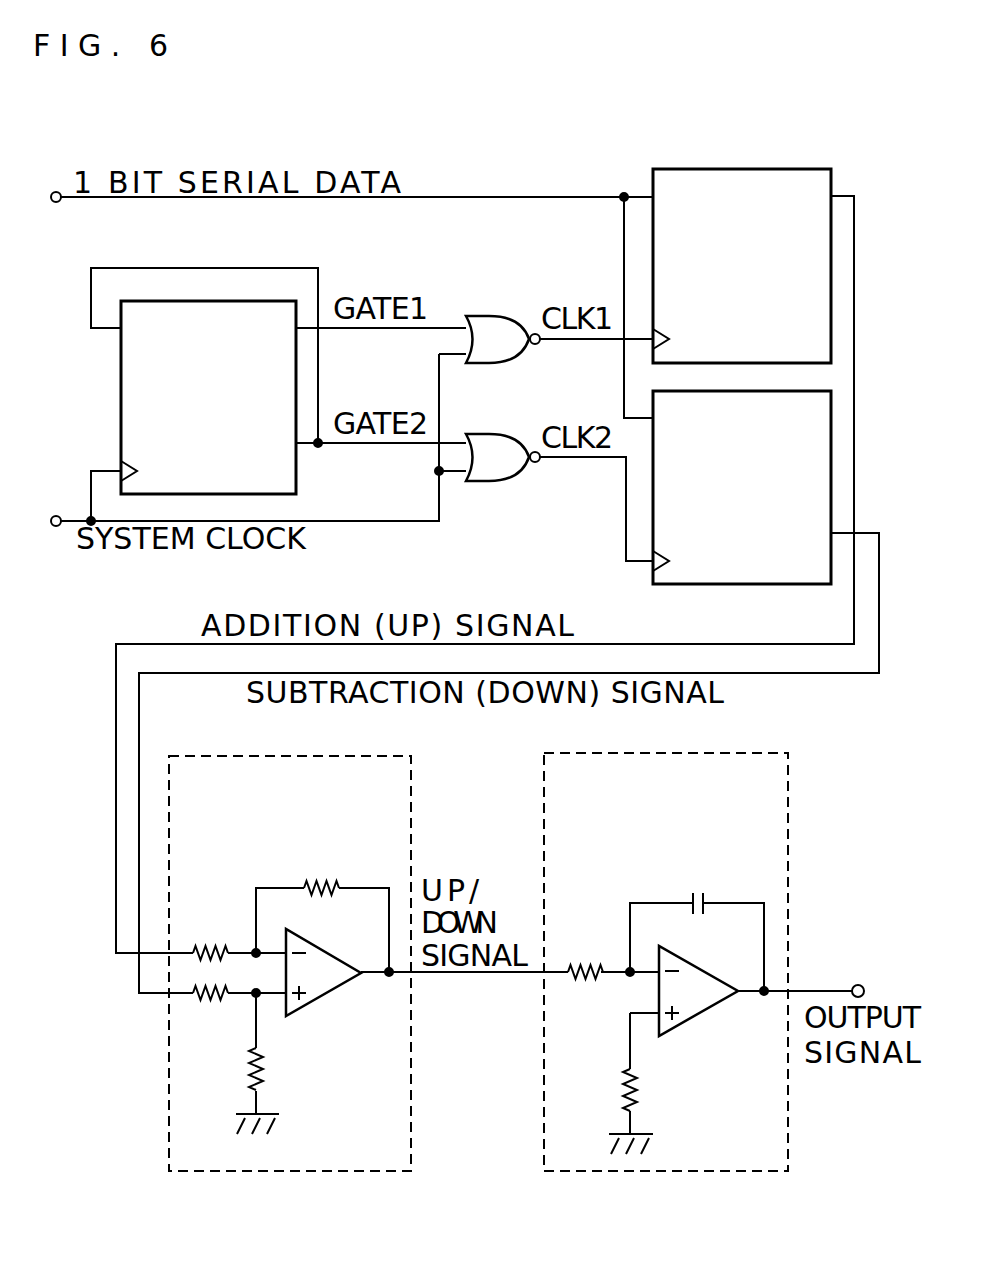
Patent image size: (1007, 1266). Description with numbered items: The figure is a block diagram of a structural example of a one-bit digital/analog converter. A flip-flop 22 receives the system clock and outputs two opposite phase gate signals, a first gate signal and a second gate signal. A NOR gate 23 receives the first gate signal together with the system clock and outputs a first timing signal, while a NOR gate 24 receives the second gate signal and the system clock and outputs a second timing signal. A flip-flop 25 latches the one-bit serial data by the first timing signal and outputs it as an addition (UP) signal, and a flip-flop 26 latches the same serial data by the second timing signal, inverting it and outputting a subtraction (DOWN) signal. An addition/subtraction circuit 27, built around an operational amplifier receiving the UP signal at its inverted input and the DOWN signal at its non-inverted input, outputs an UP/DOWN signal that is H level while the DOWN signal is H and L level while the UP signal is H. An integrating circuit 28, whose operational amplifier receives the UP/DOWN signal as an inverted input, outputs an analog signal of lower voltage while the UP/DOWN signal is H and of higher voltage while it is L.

The flip-flop 22 is at (213, 300).
The NOR gate 23 is at (478, 315).
The NOR gate 24 is at (480, 480).
The flip-flop 25 is at (757, 168).
The flip-flop 26 is at (757, 583).
The addition/subtraction circuit 27 is at (325, 755).
The integrating circuit 28 is at (695, 752).